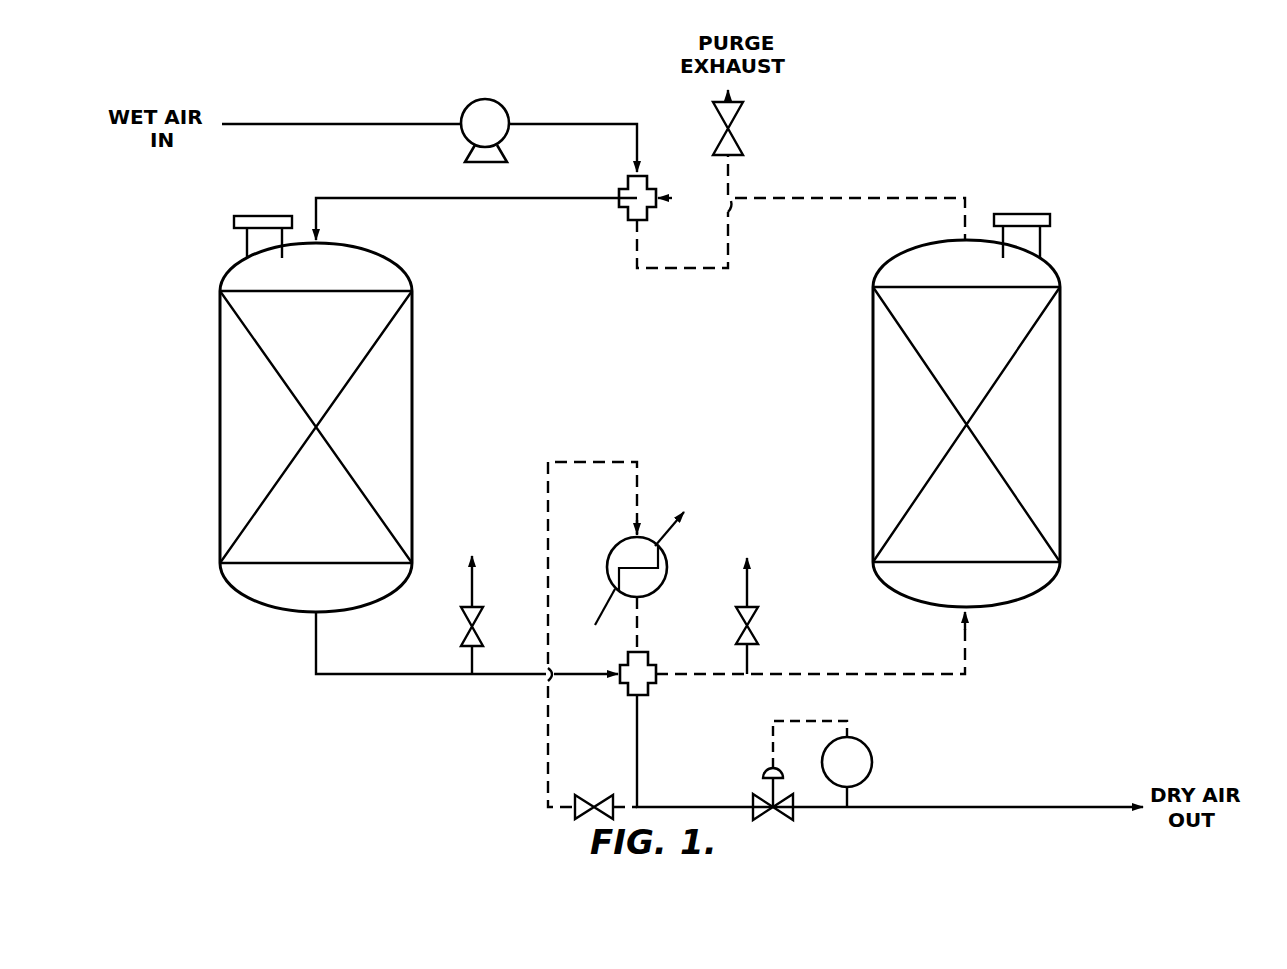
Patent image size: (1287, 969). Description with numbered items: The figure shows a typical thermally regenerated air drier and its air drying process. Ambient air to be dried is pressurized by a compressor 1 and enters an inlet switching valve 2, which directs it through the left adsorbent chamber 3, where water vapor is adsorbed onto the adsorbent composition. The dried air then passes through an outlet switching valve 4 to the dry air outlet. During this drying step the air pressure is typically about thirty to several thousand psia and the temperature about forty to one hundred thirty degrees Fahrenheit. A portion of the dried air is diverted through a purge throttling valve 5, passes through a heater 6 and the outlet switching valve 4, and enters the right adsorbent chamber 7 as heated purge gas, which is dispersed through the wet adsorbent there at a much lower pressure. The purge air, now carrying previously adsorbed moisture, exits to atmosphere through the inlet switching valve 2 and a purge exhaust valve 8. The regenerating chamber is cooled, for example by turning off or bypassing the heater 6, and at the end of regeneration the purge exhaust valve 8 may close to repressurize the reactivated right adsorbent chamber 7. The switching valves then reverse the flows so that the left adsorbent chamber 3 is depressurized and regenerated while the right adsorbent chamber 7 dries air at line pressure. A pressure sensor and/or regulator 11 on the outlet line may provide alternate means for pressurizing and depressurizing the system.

The compressor 1 is at (503, 107).
The inlet switching valve 2 is at (648, 187).
The left adsorbent chamber 3 is at (414, 370).
The outlet switching valve 4 is at (651, 663).
The purge throttling valve 5 is at (588, 796).
The heater 6 is at (663, 553).
The right adsorbent chamber 7 is at (1062, 375).
The purge exhaust valve 8 is at (734, 124).
The pressure sensor and/or regulator 11 is at (850, 722).